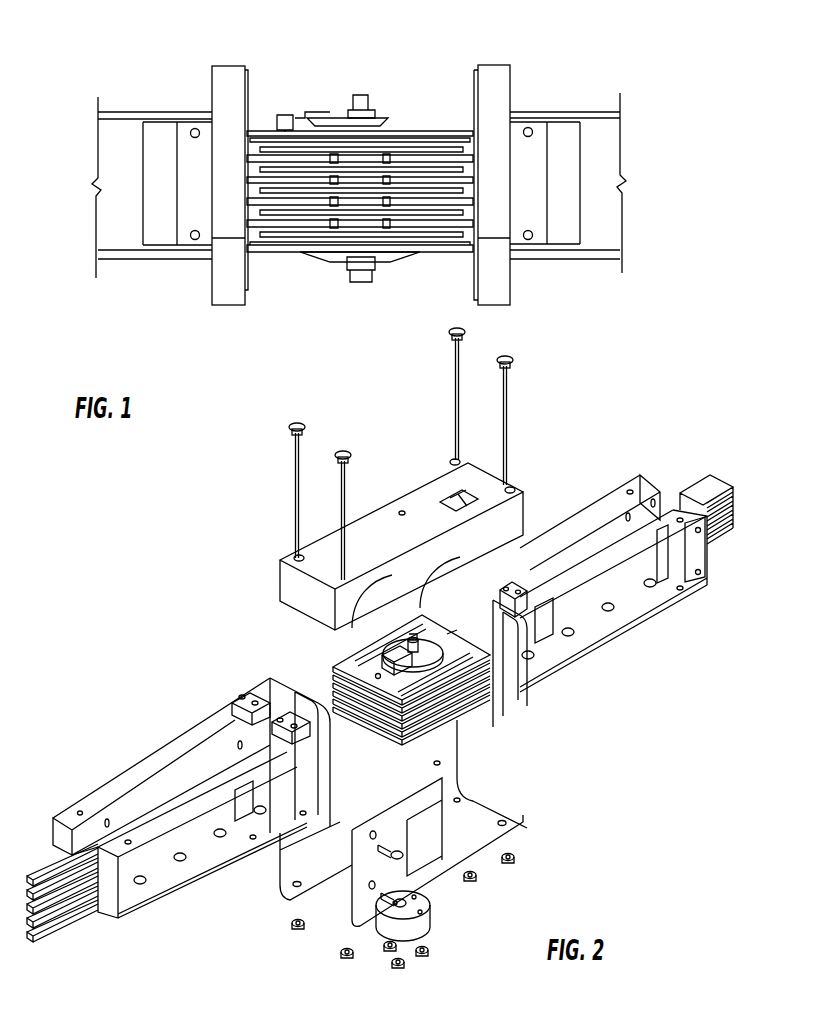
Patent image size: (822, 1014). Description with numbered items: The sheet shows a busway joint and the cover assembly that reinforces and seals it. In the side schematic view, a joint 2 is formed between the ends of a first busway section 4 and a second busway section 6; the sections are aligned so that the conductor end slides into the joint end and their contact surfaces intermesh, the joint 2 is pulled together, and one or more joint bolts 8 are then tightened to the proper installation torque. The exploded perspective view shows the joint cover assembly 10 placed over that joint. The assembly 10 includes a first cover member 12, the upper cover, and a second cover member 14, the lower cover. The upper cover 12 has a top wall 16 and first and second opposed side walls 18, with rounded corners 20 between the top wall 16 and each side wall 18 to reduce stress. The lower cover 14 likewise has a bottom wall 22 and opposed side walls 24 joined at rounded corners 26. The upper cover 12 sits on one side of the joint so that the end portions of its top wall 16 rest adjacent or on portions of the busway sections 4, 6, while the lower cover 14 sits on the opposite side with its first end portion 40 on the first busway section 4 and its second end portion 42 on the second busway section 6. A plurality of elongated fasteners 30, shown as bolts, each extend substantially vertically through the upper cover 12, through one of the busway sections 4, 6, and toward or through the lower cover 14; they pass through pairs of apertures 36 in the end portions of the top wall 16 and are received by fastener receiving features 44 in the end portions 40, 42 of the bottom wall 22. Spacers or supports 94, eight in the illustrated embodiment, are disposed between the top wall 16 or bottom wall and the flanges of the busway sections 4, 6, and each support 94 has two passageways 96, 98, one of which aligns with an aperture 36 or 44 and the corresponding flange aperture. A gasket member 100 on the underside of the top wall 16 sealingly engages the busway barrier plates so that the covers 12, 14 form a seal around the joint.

In FIG. 1, the joint 2 is at (313, 273).
In FIG. 1, the first busway section 4 is at (134, 266).
In FIG. 2, the first busway section 4 is at (178, 794).
In FIG. 1, the second busway section 6 is at (585, 264).
In FIG. 2, the second busway section 6 is at (626, 644).
In FIG. 1, the joint bolt 8 is at (356, 284).
In FIG. 2, the joint cover assembly 10 is at (380, 660).
In FIG. 2, the first cover member 12 is at (380, 510).
In FIG. 2, the second cover member 14 is at (438, 885).
In FIG. 2, the top wall 16 is at (462, 495).
In FIG. 2, the side walls 18 is at (355, 622).
In FIG. 2, the corners 20 is at (509, 500).
In FIG. 2, the bottom wall 22 is at (381, 843).
In FIG. 2, the side walls 24 is at (280, 870).
In FIG. 2, the corners 26 is at (283, 897).
In FIG. 2, the elongated fasteners 30 is at (338, 532).
In FIG. 2, the apertures 36 is at (453, 463).
In FIG. 2, the first end portion 40 is at (327, 913).
In FIG. 2, the second end portion 42 is at (473, 802).
In FIG. 2, the fastener receiving features 44 is at (506, 821).
In FIG. 2, the supports 94 is at (233, 671).
In FIG. 2, the passageway 96 is at (240, 695).
In FIG. 2, the passageway 98 is at (268, 686).
In FIG. 2, the gasket member 100 is at (360, 585).